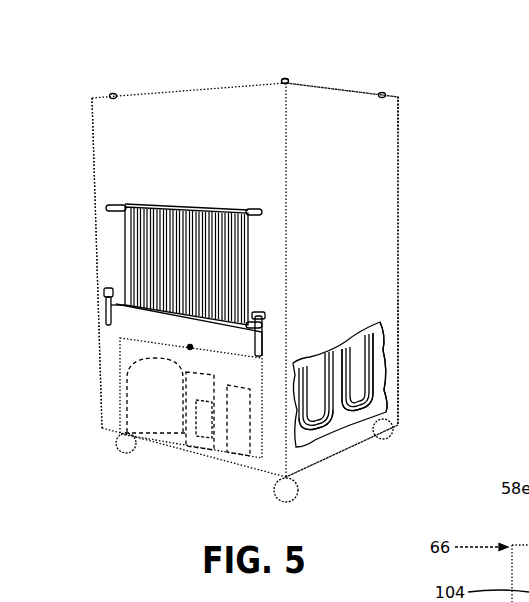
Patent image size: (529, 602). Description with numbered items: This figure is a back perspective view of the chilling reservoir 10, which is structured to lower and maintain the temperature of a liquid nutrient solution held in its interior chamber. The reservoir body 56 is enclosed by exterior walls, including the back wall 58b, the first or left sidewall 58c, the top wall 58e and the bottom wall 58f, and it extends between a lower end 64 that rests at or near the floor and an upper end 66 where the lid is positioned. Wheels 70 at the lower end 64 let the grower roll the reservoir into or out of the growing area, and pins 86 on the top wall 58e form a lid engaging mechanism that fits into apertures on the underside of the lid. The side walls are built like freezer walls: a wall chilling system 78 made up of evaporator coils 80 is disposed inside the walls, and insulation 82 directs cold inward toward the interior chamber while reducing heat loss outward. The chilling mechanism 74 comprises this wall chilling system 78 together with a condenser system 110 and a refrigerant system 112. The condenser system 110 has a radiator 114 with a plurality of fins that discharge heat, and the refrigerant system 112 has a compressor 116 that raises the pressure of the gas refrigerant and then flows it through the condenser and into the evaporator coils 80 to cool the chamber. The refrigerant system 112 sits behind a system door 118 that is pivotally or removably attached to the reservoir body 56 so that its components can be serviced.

The chilling reservoir 10 is at (410, 51).
The reservoir body 56 is at (107, 121).
The back wall 58b is at (152, 163).
The first or left sidewall 58c is at (373, 189).
The top wall 58e is at (153, 82).
The bottom wall 58f is at (356, 451).
The lower end 64 is at (409, 408).
The upper end 66 is at (410, 108).
The wheels 70 is at (120, 450).
The chilling mechanism 74 is at (278, 351).
The wall chilling system 78 is at (361, 351).
The evaporator coils 80 is at (322, 428).
The insulation 82 is at (384, 369).
The pins 86 is at (287, 80).
The condenser system 110 is at (126, 240).
The refrigerant system 112 is at (181, 423).
The radiator 114 is at (122, 270).
The compressor 116 is at (143, 380).
The system door 118 is at (132, 345).